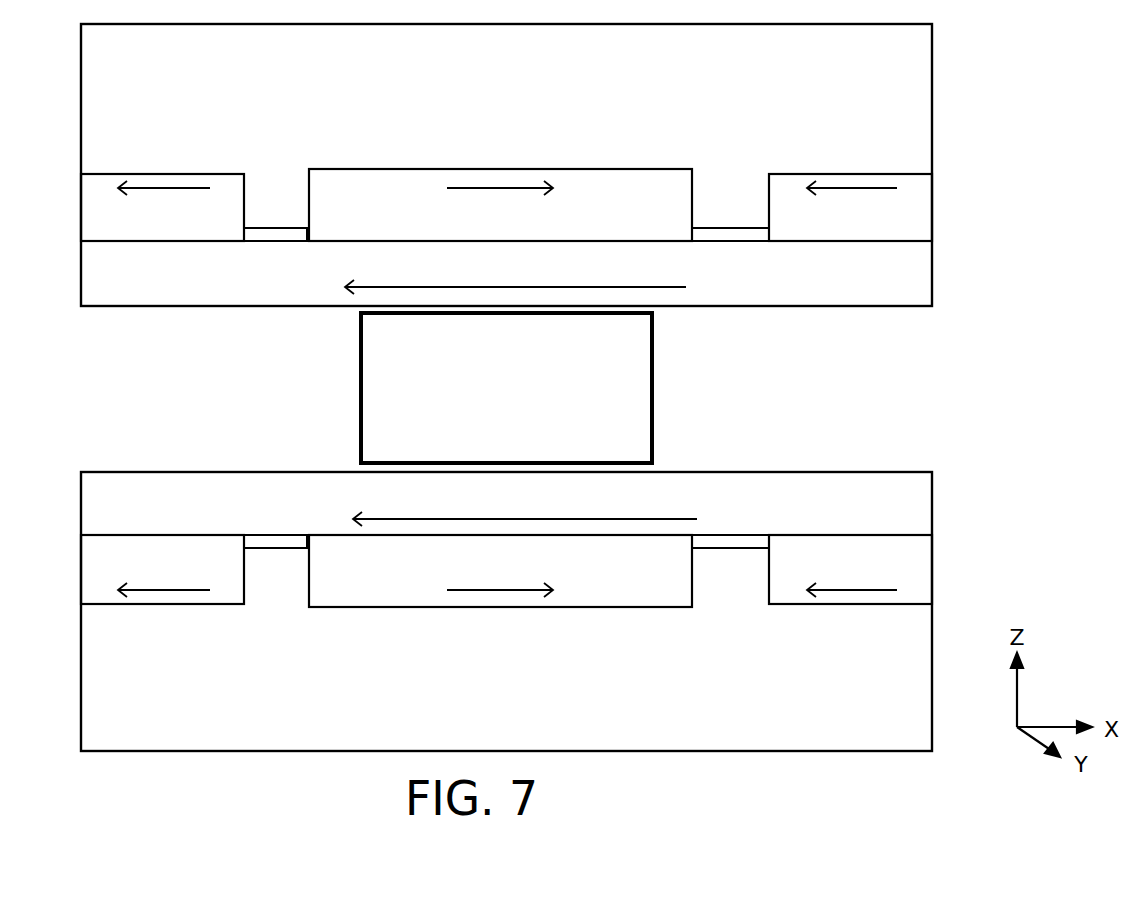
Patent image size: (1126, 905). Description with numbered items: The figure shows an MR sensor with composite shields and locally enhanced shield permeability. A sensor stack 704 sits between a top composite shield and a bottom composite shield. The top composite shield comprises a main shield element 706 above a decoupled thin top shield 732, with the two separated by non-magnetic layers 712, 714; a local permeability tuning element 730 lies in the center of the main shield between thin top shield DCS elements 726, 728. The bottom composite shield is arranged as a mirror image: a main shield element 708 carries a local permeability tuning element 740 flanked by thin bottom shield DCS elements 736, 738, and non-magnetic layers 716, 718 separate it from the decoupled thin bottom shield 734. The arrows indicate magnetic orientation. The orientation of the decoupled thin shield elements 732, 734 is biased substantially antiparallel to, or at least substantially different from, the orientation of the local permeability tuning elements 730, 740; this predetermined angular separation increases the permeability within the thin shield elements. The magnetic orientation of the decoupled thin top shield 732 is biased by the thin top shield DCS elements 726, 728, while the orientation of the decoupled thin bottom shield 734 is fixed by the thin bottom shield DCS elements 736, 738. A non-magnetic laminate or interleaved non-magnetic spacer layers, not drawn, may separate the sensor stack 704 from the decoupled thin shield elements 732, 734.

The sensor stack 704 is at (485, 399).
The main shield element 706 is at (485, 144).
The main shield element 708 is at (526, 669).
The non-magnetic layer 712 is at (278, 243).
The non-magnetic layer 714 is at (734, 243).
The non-magnetic layer 716 is at (283, 533).
The non-magnetic layer 718 is at (738, 532).
The thin top shield DCS element 726 is at (141, 219).
The thin top shield DCS element 728 is at (829, 219).
The local permeability tuning element 730 is at (488, 218).
The decoupled thin top shield 732 is at (515, 278).
The decoupled thin bottom shield 734 is at (525, 508).
The thin bottom shield DCS element 736 is at (141, 581).
The thin bottom shield DCS element 738 is at (829, 582).
The local permeability tuning element 740 is at (488, 582).